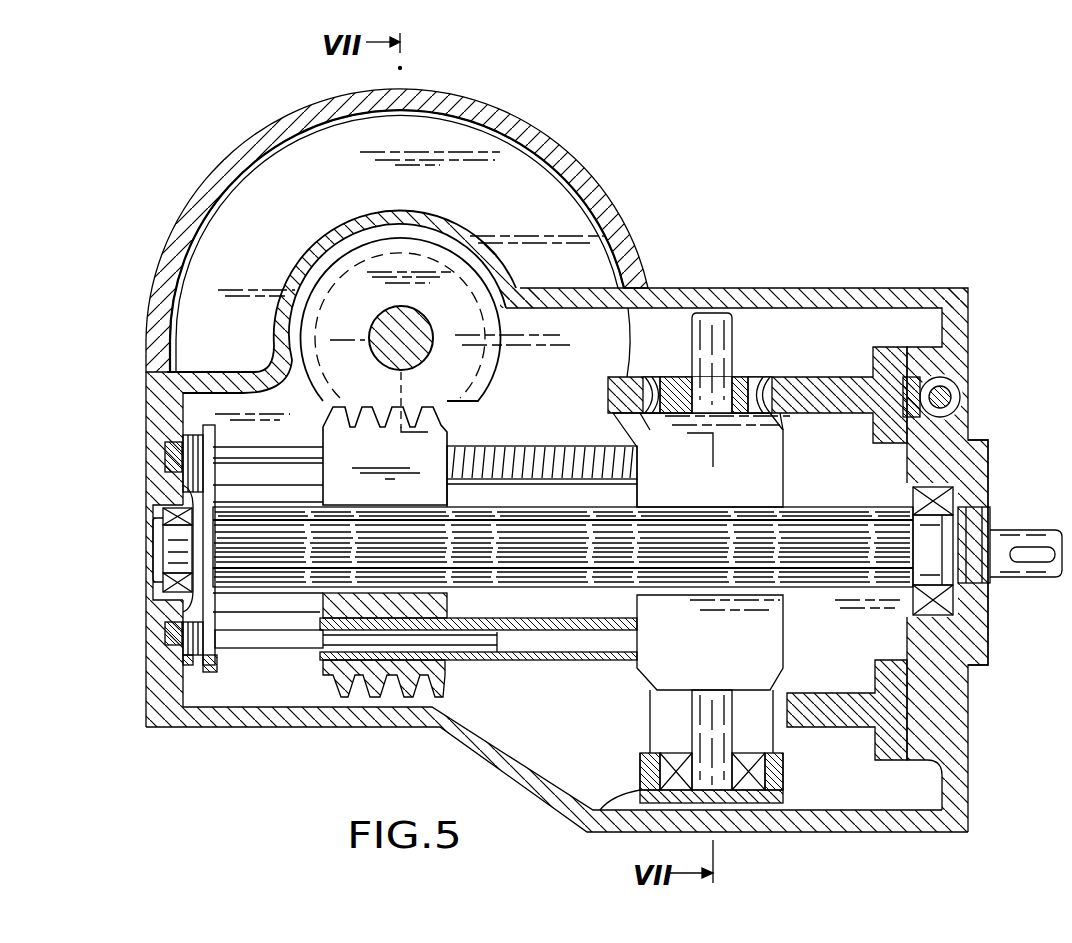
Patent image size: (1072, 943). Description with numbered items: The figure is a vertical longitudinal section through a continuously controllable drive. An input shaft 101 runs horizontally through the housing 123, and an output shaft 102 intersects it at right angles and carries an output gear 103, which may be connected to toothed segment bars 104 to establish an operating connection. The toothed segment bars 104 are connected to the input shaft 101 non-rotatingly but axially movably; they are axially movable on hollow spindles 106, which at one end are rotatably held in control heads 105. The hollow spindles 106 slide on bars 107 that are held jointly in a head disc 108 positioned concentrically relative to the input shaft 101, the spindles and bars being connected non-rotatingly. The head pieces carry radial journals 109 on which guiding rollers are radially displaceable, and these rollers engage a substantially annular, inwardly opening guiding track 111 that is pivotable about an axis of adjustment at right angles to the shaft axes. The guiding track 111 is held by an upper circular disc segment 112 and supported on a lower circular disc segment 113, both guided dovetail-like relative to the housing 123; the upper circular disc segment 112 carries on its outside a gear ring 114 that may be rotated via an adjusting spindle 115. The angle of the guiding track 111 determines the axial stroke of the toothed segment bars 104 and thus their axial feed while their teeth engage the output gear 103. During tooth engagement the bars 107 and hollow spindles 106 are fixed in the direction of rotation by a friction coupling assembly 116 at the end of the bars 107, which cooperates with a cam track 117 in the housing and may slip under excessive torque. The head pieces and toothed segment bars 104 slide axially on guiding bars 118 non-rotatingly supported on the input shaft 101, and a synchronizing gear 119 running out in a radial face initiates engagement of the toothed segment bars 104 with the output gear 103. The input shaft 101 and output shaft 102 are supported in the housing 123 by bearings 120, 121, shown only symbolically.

The input shaft 101 is at (888, 551).
The output shaft 102 is at (434, 332).
The output gear 103 is at (468, 274).
The toothed segment bars 104 is at (423, 473).
The control heads 105 is at (657, 668).
The hollow spindles 106 is at (485, 660).
The bars 107 is at (280, 645).
The head disc 108 is at (210, 645).
The radial journals 109 is at (590, 833).
The guiding track 111 is at (787, 743).
The upper circular disc segment 112 is at (818, 385).
The lower circular disc segment 113 is at (852, 723).
The gear ring 114 is at (920, 372).
The adjusting spindle 115 is at (962, 393).
The friction coupling assembly 116 is at (197, 625).
The cam track 117 is at (178, 660).
The guiding bars 118 is at (703, 765).
The synchronizing gear 119 is at (530, 170).
The bearing 120 is at (160, 592).
The bearing 121 is at (973, 650).
The housing 123 is at (918, 293).